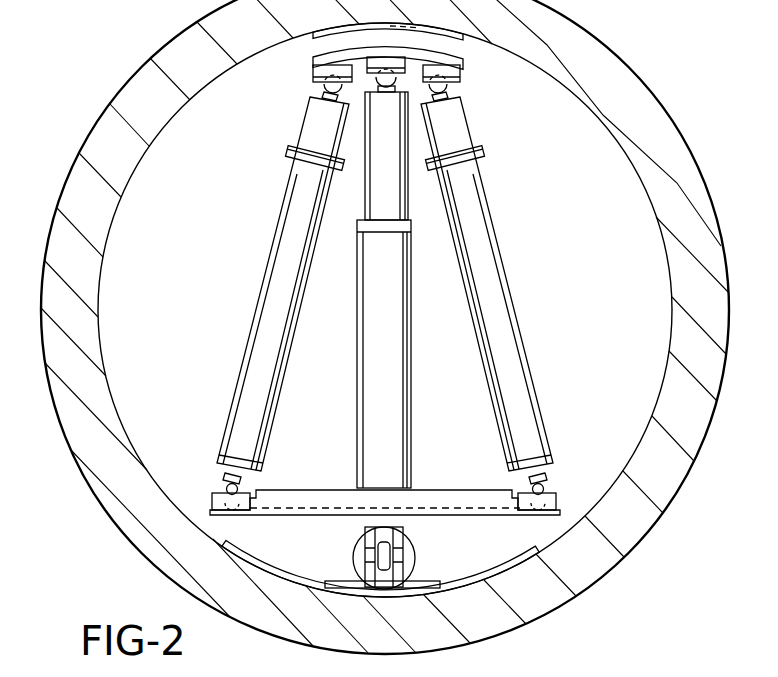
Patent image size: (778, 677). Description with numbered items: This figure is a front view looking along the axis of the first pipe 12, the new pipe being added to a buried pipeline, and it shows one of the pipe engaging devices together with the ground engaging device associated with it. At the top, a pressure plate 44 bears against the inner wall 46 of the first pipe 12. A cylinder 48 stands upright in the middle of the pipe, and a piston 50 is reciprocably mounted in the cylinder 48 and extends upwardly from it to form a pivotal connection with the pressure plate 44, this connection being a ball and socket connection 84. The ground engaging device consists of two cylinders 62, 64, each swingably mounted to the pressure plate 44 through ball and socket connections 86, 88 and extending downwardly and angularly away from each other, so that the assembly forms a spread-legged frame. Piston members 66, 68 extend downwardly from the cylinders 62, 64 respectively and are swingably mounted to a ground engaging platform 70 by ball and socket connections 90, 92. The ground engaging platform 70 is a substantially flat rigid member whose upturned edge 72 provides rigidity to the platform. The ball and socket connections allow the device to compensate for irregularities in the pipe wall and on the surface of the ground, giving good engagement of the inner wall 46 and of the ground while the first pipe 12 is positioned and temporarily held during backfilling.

The first pipe 12 is at (396, 327).
The pressure plate 44 is at (455, 52).
The inner wall 46 is at (668, 350).
The cylinder 48 is at (391, 390).
The piston 50 is at (386, 99).
The cylinder 62 is at (283, 343).
The cylinder 64 is at (517, 377).
The piston member 66 is at (250, 467).
The piston member 68 is at (530, 463).
The ground engaging platform 70 is at (475, 492).
The upturned edge 72 is at (385, 501).
The ball and socket connection 84 is at (383, 60).
The ball and socket connection 86 is at (310, 75).
The ball and socket connection 88 is at (457, 68).
The ball and socket connection 90 is at (225, 478).
The ball and socket connection 92 is at (545, 487).